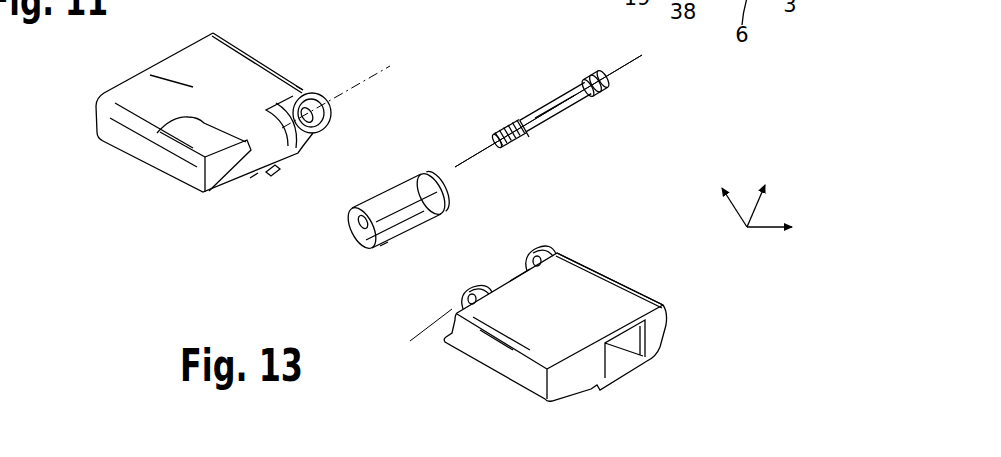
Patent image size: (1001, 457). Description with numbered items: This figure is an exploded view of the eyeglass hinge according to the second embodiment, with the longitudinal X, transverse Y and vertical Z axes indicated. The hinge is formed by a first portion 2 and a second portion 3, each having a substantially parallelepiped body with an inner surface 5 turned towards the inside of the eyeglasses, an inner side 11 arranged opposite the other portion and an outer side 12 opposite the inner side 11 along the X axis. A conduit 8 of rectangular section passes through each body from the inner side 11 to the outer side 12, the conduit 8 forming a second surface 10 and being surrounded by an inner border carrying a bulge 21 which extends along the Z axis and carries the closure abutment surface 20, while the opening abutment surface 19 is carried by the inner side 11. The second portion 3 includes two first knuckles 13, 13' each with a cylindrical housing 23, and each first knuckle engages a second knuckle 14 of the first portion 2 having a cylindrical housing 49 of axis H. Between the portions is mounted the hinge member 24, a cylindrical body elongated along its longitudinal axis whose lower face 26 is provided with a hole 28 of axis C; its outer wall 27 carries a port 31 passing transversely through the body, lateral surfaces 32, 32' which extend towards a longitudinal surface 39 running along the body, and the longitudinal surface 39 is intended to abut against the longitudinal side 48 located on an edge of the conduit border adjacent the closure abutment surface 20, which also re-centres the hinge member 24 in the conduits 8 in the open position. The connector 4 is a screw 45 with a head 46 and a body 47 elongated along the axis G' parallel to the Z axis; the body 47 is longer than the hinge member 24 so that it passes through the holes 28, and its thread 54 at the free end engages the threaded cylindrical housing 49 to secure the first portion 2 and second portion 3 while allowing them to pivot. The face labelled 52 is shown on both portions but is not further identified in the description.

The first portion 2 is at (203, 70).
The second portion 3 is at (628, 290).
The inner surface 5 is at (225, 72).
The conduit 8 is at (258, 132).
The second surface 10 is at (254, 176).
The inner side 11 is at (312, 93).
The outer side 12 is at (567, 378).
The first knuckle 13 is at (522, 241).
The first knuckle 13' is at (448, 298).
The second knuckle 14 is at (227, 172).
The opening abutment surface 19 is at (287, 151).
The closure abutment surface 20 is at (303, 88).
The bulge 21 is at (165, 135).
The cylindrical housing 23 is at (532, 257).
The hinge member 24 is at (365, 253).
The lower face 26 is at (347, 233).
The outer wall 27 is at (393, 190).
The hole 28 is at (355, 203).
The port 31 is at (428, 230).
The lateral surface 32 is at (460, 193).
The lateral surface 32' is at (390, 273).
The longitudinal surface 39 is at (412, 195).
The connector 4 is at (563, 77).
The screw 45 is at (509, 134).
The head 46 is at (608, 91).
The body 47 is at (548, 121).
The longitudinal side 48 is at (520, 270).
The cylindrical housing 49 is at (316, 126).
The side face 52 is at (170, 148).
The thread 54 is at (503, 117).
The axis H is at (386, 67).
The axis G' is at (582, 111).
The axis C is at (422, 333).
The longitudinal X axis X is at (779, 229).
The transverse Y axis Y is at (727, 202).
The vertical axis Z is at (763, 194).